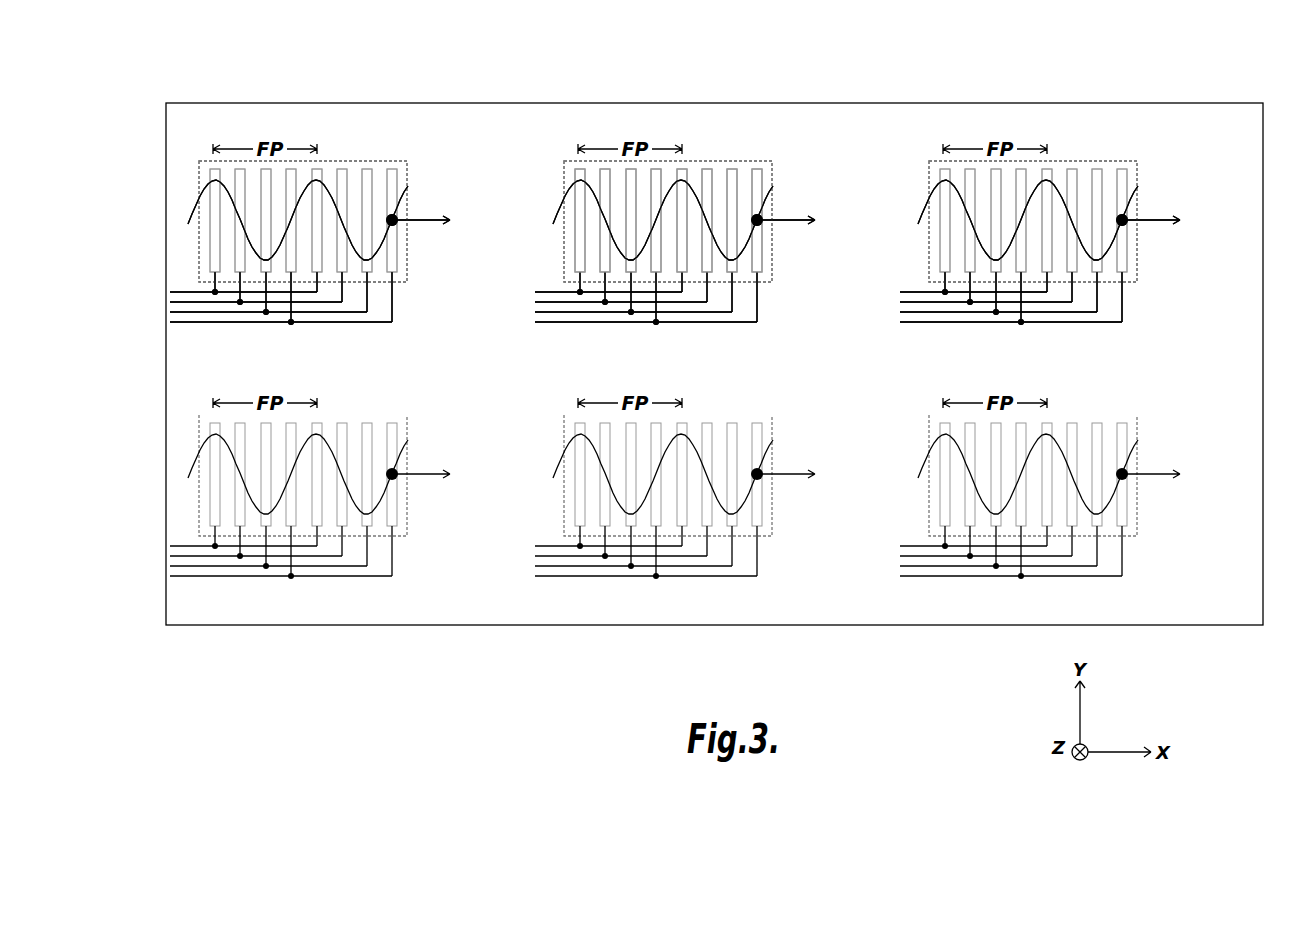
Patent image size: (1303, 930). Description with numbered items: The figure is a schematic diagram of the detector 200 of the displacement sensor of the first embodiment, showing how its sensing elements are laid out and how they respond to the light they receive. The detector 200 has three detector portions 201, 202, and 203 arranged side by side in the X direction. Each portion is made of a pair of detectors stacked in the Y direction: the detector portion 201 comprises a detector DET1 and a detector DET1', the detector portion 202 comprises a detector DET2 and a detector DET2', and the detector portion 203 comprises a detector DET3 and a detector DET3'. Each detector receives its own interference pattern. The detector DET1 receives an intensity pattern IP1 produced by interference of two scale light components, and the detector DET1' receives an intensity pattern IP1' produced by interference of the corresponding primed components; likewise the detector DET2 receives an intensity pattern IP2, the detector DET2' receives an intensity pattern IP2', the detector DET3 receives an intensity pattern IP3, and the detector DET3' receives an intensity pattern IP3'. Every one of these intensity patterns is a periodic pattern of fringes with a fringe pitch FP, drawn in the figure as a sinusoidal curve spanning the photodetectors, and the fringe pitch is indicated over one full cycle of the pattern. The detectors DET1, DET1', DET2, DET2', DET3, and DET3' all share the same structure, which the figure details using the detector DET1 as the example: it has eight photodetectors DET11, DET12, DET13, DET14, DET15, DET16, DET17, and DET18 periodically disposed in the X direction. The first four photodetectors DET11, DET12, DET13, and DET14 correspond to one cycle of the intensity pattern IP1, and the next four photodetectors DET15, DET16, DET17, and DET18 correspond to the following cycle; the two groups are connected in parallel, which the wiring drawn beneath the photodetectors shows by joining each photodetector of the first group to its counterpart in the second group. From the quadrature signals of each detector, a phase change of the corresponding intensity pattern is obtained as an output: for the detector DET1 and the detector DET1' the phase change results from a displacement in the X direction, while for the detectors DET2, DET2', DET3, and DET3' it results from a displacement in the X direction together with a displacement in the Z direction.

The detector 200 is at (1213, 36).
The detector portion 201 is at (833, 134).
The detector portion 202 is at (400, 137).
The detector portion 203 is at (1148, 139).
The detector DET1 is at (695, 243).
The detector DET2 is at (1059, 243).
The detector DET3 is at (332, 243).
The photodetector DET11 is at (580, 271).
The photodetector DET12 is at (607, 168).
The photodetector DET13 is at (630, 170).
The photodetector DET14 is at (657, 169).
The photodetector DET15 is at (684, 170).
The photodetector DET16 is at (707, 170).
The photodetector DET17 is at (730, 169).
The photodetector DET18 is at (759, 168).
The intensity pattern IP1 is at (690, 219).
The intensity pattern IP2 is at (1055, 219).
The intensity pattern IP3 is at (332, 219).
The detector DET1' is at (699, 485).
The detector DET2' is at (1062, 485).
The detector DET3' is at (342, 485).
The intensity pattern IP1' is at (699, 473).
The intensity pattern IP2' is at (1058, 473).
The intensity pattern IP3' is at (328, 473).